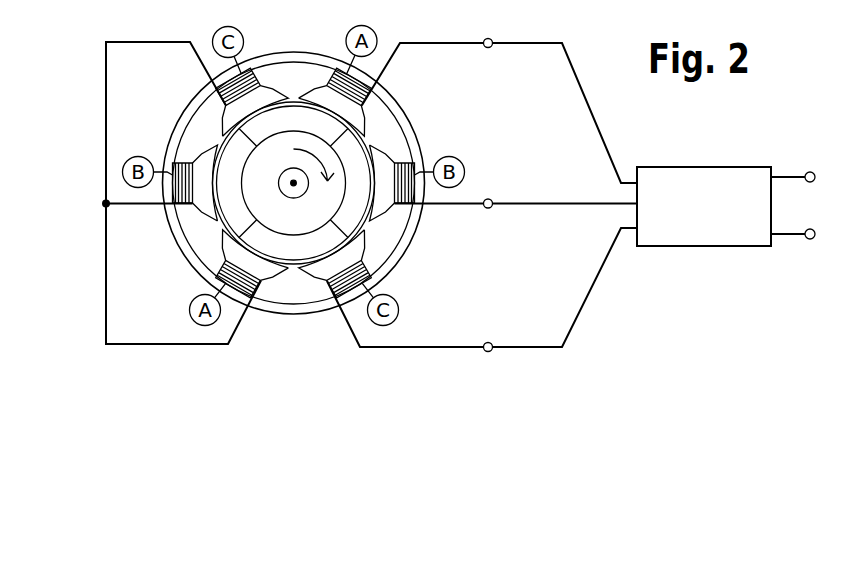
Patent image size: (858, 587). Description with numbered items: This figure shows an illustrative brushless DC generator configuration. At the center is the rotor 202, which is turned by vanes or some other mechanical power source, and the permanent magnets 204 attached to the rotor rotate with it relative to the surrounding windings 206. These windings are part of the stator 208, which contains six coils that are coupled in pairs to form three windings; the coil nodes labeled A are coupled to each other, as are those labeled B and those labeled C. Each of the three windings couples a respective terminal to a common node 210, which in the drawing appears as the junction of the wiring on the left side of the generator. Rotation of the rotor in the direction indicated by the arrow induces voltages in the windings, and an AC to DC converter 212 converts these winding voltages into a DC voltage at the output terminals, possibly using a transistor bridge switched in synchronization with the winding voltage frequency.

The rotor 202 is at (256, 205).
The permanent magnets 204 is at (296, 100).
The windings 206 is at (313, 278).
The stator 208 is at (180, 117).
The common node 210 is at (145, 42).
The AC to DC converter 212 is at (682, 246).